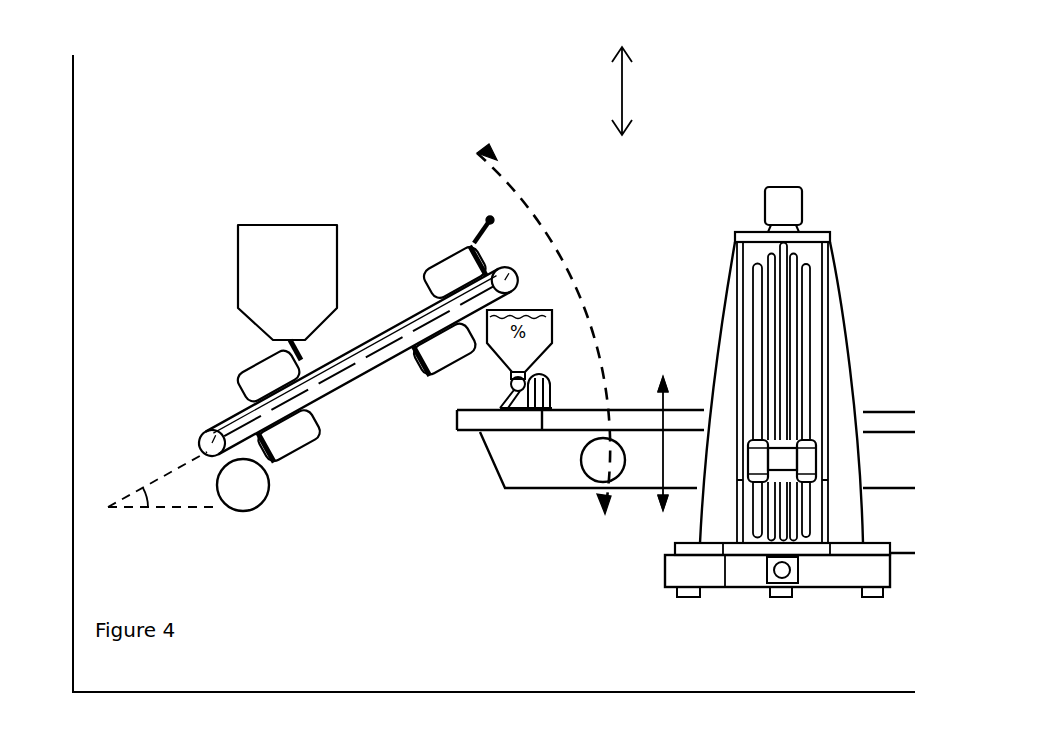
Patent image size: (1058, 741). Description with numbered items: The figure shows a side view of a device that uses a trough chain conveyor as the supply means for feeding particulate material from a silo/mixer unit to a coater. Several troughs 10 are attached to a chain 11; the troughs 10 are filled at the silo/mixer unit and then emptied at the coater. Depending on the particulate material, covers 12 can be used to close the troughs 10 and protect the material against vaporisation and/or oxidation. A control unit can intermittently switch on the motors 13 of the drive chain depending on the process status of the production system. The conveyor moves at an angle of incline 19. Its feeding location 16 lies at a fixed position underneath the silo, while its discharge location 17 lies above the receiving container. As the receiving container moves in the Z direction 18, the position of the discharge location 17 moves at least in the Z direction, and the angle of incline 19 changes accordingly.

The troughs 10 is at (250, 365).
The chain 11 is at (413, 303).
The covers 12 is at (488, 219).
The motors 13 is at (269, 499).
The feeding location 16 is at (305, 342).
The discharge location 17 is at (514, 268).
The Z direction 18 is at (622, 90).
The angle of incline 19 is at (148, 500).